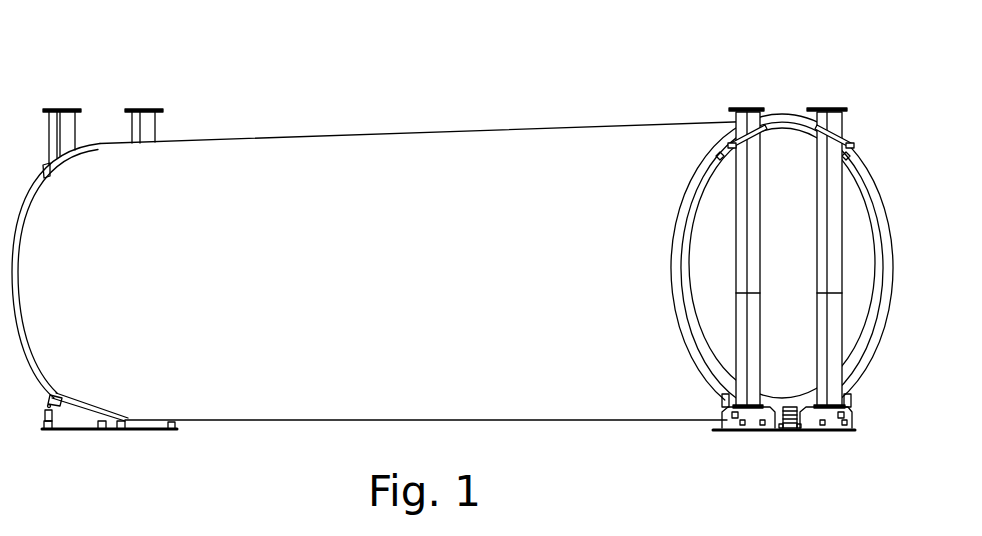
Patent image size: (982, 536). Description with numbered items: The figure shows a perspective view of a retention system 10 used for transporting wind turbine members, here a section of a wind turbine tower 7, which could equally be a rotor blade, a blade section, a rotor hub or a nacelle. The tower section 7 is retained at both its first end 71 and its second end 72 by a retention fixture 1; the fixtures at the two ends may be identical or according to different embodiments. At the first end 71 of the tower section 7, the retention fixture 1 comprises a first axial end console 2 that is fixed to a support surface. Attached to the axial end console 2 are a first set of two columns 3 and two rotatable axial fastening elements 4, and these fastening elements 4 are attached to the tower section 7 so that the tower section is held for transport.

The retention fixture 1 is at (470, 237).
The retention system 10 is at (380, 224).
The wind turbine tower section 7 is at (425, 160).
The second end 72 is at (31, 192).
The first end 71 is at (793, 269).
The first axial end console 2 is at (737, 423).
The columns 3 is at (752, 335).
The rotatable axial fastening elements 4 is at (742, 132).